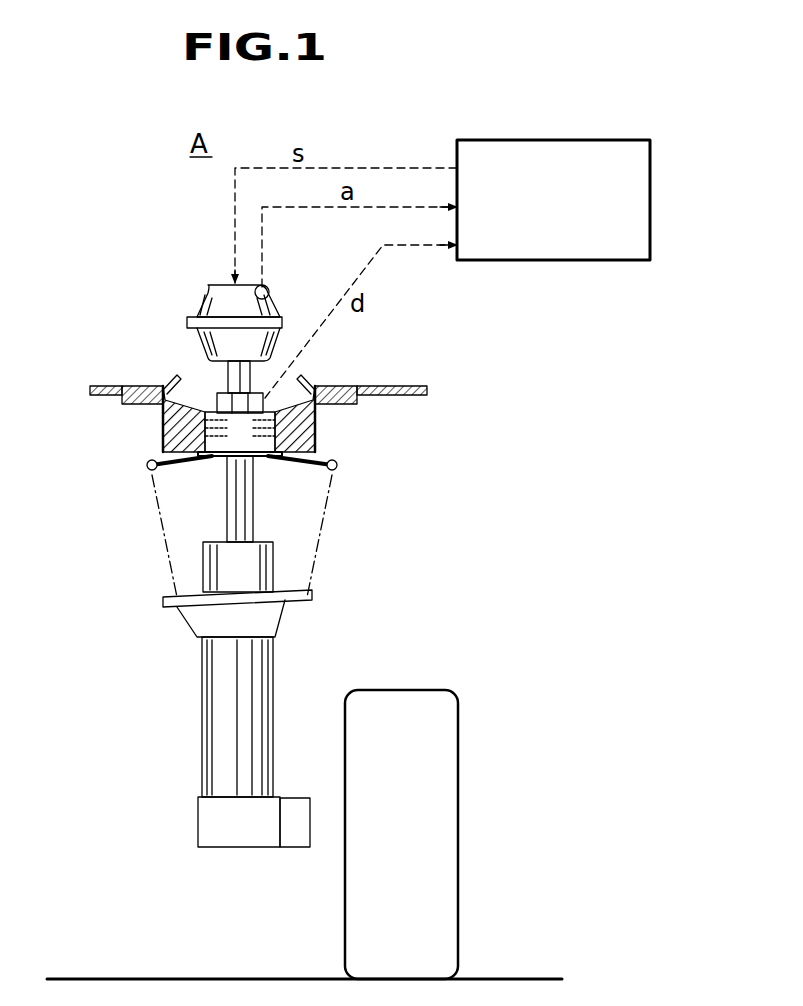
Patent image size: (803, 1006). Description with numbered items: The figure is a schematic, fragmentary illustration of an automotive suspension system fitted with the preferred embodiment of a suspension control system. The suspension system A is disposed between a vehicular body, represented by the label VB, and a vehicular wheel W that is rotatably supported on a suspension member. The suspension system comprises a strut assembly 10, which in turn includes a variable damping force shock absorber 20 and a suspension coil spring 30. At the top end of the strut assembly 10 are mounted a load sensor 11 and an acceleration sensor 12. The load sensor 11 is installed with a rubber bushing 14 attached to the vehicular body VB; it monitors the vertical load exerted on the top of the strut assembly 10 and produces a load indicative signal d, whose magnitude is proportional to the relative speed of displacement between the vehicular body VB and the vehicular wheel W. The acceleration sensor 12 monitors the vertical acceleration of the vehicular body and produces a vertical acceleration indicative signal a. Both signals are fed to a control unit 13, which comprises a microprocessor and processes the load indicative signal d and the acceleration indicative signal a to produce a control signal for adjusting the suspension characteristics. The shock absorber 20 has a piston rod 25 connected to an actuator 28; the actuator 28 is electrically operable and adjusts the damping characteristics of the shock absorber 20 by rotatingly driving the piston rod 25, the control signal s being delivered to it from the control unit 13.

The strut assembly 10 is at (135, 648).
The load sensor 11 is at (253, 466).
The acceleration sensor 12 is at (268, 288).
The control unit 13 is at (583, 139).
The rubber bushing 14 is at (313, 422).
The variable damping force shock absorber 20 is at (215, 722).
The piston rod 25 is at (230, 505).
The actuator 28 is at (208, 292).
The suspension coil spring 30 is at (148, 470).
The vehicular body VB is at (108, 388).
The vehicular wheel W is at (443, 712).